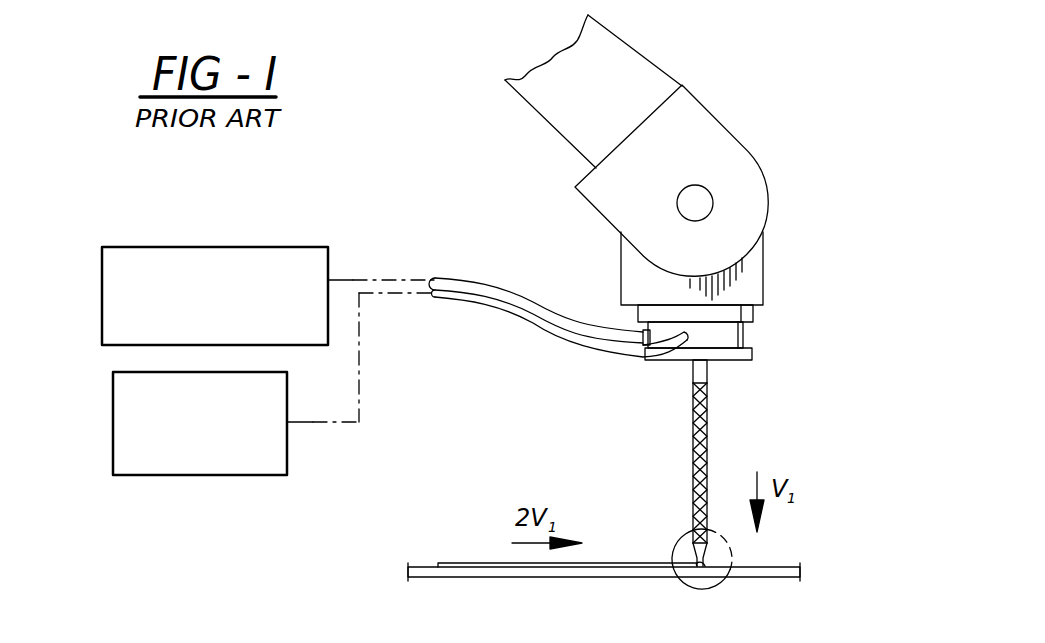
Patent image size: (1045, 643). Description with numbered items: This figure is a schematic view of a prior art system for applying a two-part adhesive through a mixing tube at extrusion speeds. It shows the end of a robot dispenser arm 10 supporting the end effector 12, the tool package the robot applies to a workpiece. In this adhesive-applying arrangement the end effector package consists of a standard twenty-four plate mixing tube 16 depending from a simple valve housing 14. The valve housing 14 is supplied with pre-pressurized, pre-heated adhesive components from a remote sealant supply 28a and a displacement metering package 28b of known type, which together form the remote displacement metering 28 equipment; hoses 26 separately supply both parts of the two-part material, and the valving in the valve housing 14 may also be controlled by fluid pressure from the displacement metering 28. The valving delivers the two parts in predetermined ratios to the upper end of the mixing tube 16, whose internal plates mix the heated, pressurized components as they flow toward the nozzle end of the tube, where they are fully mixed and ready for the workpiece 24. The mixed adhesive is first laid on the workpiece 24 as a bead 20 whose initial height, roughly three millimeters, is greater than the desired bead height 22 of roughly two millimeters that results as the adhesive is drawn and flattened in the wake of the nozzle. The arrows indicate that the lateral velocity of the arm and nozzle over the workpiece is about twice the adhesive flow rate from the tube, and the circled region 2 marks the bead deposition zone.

The detail region of sealant application (FIG. 2 view) 2 is at (683, 589).
The robot dispenser arm 10 is at (612, 63).
The end effector 12 is at (765, 252).
The valve housing 14 is at (750, 333).
The mixing tube 16 is at (708, 417).
The bead 20 is at (712, 583).
The desired bead size or height 22 is at (468, 563).
The workpiece 24 is at (425, 567).
The hoses 26 is at (560, 320).
The displacement metering 28 is at (232, 361).
The sealant supply 28a is at (200, 464).
The displacement metering package 28b is at (252, 247).